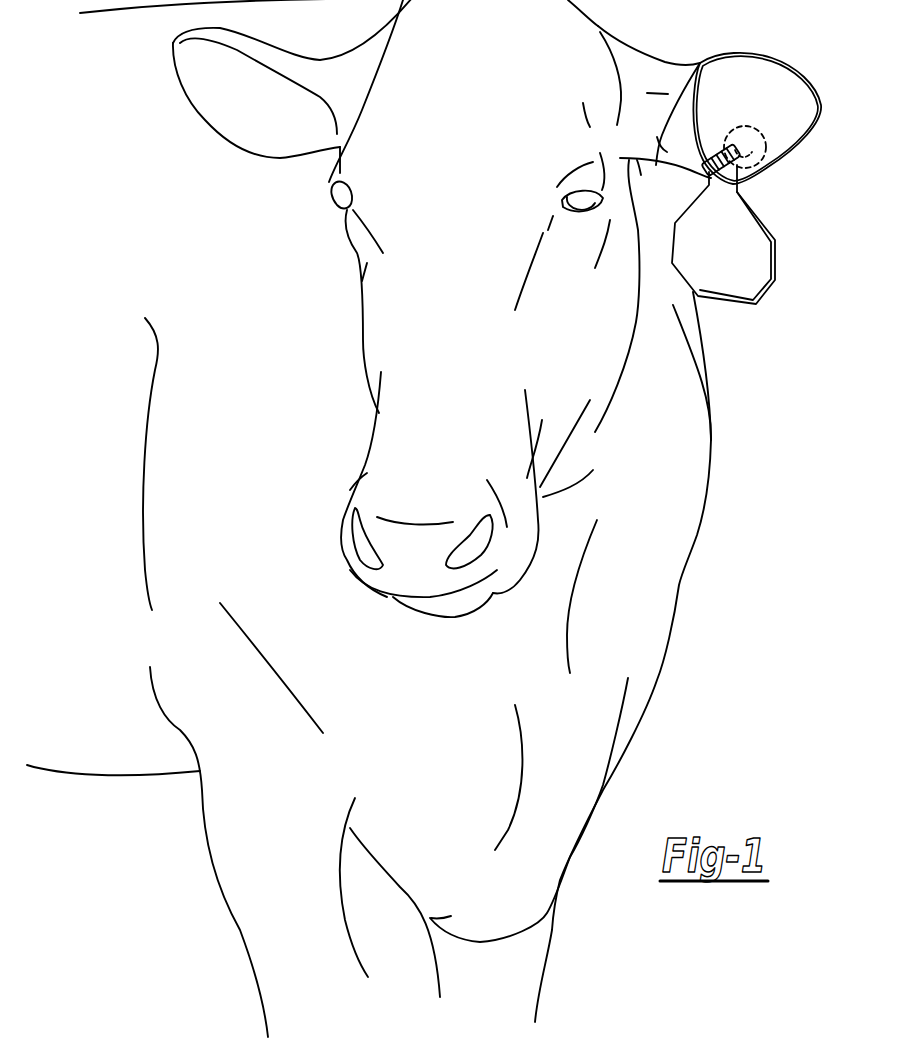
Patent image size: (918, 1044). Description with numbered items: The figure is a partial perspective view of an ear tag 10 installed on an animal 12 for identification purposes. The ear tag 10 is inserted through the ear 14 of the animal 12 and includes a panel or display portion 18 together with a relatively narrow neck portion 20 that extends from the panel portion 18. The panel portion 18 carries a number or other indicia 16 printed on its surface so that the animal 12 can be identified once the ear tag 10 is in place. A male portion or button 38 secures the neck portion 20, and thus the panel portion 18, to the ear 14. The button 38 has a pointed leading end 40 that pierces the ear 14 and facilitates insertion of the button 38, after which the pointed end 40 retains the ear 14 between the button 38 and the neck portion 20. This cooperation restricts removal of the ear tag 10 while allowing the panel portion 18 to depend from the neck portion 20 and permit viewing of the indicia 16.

The ear tag 10 is at (782, 194).
The animal 12 is at (703, 531).
The ear 14 is at (820, 81).
The indicia 16 is at (738, 243).
The panel portion 18 is at (723, 292).
The neck portion 20 is at (736, 185).
The button 38 is at (770, 142).
The pointed leading end 40 is at (700, 63).